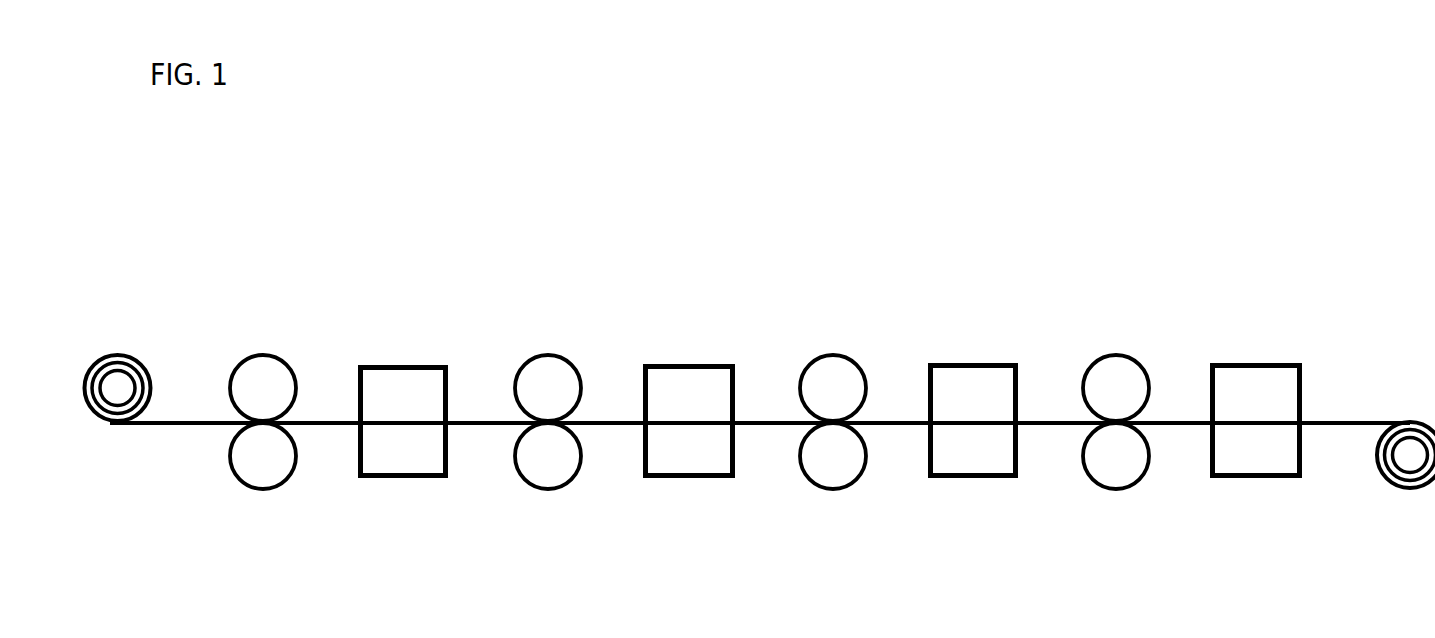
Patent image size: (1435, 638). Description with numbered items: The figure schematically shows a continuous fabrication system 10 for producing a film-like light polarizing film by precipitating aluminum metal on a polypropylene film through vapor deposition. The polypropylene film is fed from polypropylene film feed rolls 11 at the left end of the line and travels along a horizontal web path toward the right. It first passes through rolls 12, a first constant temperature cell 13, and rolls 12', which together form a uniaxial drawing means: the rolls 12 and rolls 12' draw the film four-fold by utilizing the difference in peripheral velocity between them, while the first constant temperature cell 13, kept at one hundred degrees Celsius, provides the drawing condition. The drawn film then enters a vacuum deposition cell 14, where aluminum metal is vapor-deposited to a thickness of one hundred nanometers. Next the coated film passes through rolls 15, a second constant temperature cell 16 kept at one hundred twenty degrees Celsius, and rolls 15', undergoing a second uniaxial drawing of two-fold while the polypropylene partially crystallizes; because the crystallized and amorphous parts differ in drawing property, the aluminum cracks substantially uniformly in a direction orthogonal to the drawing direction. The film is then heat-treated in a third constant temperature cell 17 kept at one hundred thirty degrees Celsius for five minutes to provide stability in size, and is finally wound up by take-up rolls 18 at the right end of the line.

The continuous fabrication system 10 is at (714, 248).
The polypropylene film feed rolls 11 is at (112, 388).
The rolls 12 is at (263, 381).
The rolls 12' is at (548, 383).
The first constant temperature cell 13 is at (398, 468).
The vacuum deposition cell 14 is at (690, 465).
The rolls 15 is at (833, 386).
The rolls 15' is at (1116, 384).
The second constant temperature cell 16 is at (972, 466).
The third constant temperature cell 17 is at (1255, 467).
The take-up rolls 18 is at (1410, 447).